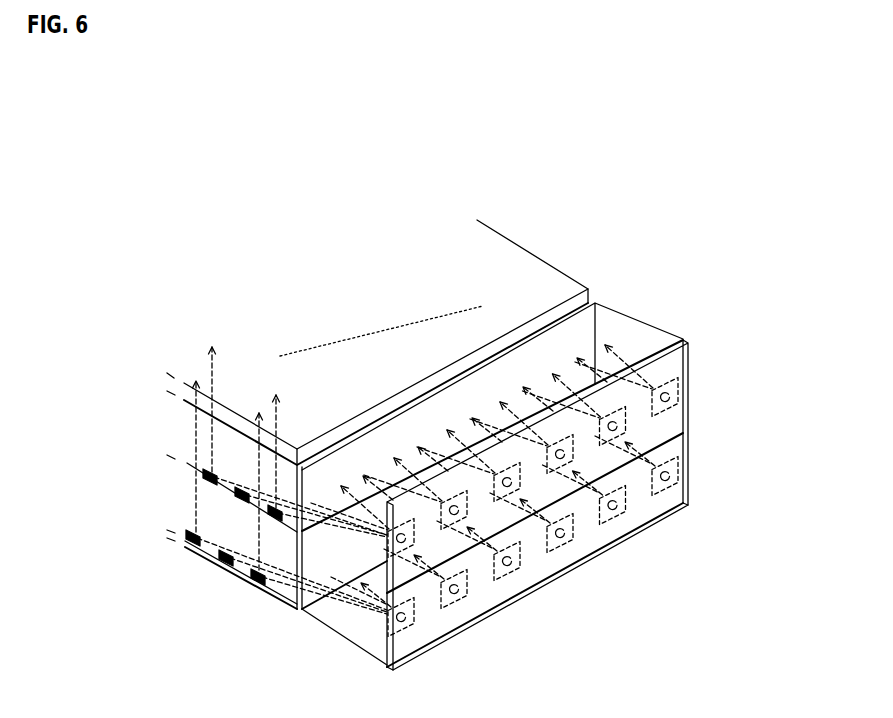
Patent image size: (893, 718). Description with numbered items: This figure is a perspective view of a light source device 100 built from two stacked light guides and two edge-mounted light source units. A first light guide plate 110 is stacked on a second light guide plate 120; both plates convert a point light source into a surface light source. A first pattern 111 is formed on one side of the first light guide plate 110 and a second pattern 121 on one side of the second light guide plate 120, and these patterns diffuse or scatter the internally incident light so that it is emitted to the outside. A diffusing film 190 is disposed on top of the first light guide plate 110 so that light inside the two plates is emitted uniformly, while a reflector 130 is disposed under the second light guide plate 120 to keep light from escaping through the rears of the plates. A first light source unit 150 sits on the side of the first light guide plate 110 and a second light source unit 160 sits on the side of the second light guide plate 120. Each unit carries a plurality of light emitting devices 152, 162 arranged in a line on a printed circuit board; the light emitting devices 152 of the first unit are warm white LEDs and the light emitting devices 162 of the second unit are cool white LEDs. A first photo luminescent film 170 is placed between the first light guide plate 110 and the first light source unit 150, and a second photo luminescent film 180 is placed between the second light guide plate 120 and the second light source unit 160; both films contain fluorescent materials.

The light source device 100 is at (471, 216).
The first light guide plate 110 is at (217, 437).
The first pattern 111 is at (205, 478).
The second light guide plate 120 is at (198, 551).
The second pattern 121 is at (227, 566).
The reflector 130 is at (254, 586).
The first light source unit 150 is at (690, 352).
The light emitting devices 152 is at (680, 399).
The second light source unit 160 is at (688, 499).
The light emitting devices 162 is at (682, 468).
The first photo luminescent film 170 is at (585, 342).
The second photo luminescent film 180 is at (319, 562).
The diffusing film 190 is at (551, 275).